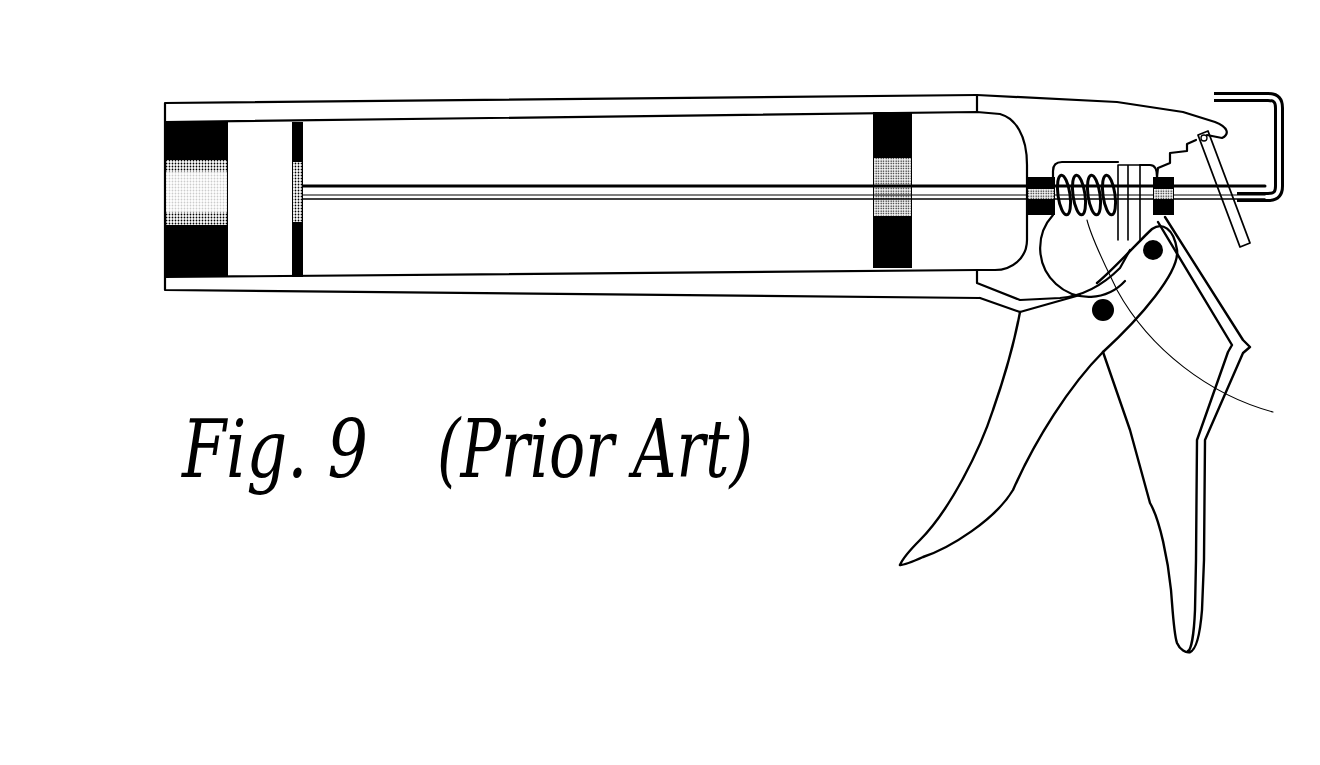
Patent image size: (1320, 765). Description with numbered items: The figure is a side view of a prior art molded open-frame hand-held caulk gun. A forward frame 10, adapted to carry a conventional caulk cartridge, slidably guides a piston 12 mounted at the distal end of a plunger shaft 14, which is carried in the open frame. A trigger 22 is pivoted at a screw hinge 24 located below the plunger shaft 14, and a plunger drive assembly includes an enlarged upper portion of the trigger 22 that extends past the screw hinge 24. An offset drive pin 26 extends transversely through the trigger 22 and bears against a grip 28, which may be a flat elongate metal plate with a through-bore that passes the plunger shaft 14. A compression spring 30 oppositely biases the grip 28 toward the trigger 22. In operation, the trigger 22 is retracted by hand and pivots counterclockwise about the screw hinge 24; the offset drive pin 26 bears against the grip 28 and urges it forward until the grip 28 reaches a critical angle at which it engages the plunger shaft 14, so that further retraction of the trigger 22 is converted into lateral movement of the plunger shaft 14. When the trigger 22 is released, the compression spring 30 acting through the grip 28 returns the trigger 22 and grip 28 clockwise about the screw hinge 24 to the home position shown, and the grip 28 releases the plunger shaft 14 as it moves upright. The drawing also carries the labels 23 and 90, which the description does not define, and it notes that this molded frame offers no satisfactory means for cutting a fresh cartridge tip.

The forward frame 10 is at (350, 103).
The piston 12 is at (305, 260).
The plunger shaft 14 is at (382, 195).
The trigger 22 is at (942, 515).
The bushing 23 is at (1027, 207).
The screw hinge 24 is at (1103, 321).
The offset drive pin 26 is at (1163, 258).
The grip 28 is at (1167, 220).
The compression spring 30 is at (1192, 324).
The trigger 90 is at (1204, 582).